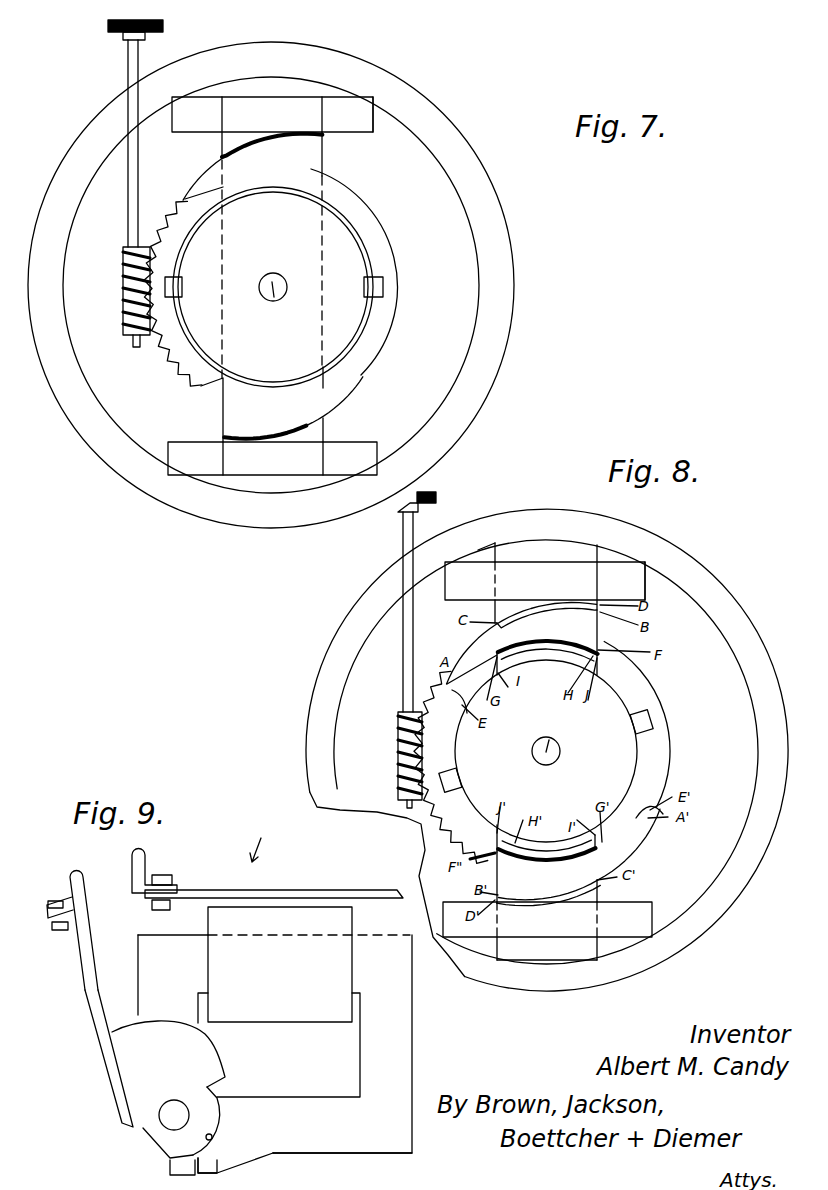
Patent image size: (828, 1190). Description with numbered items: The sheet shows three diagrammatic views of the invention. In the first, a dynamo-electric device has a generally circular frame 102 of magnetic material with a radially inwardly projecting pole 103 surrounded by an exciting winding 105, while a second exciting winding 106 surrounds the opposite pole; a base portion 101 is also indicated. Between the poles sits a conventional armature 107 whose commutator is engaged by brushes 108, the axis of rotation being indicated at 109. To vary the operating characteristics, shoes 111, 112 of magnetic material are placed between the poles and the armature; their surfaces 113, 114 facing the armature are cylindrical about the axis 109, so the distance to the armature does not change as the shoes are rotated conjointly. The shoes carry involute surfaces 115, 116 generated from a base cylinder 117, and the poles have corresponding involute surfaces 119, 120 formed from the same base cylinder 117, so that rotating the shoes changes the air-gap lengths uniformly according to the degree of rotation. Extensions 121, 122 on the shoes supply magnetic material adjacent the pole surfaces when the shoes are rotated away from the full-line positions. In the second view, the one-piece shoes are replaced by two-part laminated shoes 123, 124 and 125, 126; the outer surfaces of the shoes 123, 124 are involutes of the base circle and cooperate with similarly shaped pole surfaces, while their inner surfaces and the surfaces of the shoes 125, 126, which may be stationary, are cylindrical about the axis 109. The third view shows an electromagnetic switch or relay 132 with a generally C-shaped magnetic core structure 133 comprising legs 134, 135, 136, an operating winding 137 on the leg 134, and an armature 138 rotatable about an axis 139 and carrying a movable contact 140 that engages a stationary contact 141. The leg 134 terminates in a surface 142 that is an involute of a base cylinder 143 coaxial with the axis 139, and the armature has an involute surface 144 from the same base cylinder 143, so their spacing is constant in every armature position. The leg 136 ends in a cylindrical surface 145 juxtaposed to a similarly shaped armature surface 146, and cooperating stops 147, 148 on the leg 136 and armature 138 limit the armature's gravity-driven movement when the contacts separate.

In FIG. 7, the base 101 is at (318, 432).
In FIG. 8, the base 101 is at (560, 958).
In FIG. 7, the frame 102 is at (498, 258).
In FIG. 8, the frame 102 is at (707, 583).
In FIG. 7, the pole 103 is at (290, 107).
In FIG. 8, the pole 103 is at (575, 552).
In FIG. 7, the exciting winding 105 is at (370, 118).
In FIG. 8, the exciting winding 105 is at (628, 577).
In FIG. 7, the exciting winding 106 is at (178, 460).
In FIG. 8, the exciting winding 106 is at (648, 914).
In FIG. 7, the armature 107 is at (340, 238).
In FIG. 8, the armature 107 is at (623, 762).
In FIG. 7, the brushes 108 is at (164, 290).
In FIG. 8, the brushes 108 is at (655, 726).
In FIG. 7, the axis of rotation 109 is at (274, 297).
In FIG. 8, the axis of rotation 109 is at (534, 733).
In FIG. 7, the shoe 111 is at (325, 160).
In FIG. 7, the shoe 112 is at (230, 413).
In FIG. 7, the cylindrical surface 113 is at (280, 188).
In FIG. 7, the cylindrical surface 114 is at (272, 385).
In FIG. 7, the involute surface 115 is at (205, 172).
In FIG. 7, the involute surface 116 is at (346, 403).
In FIG. 7, the base cylinder 117 is at (268, 274).
In FIG. 8, the base cylinder 117 is at (561, 752).
In FIG. 7, the involute surface 119 is at (232, 148).
In FIG. 7, the involute surface 120 is at (294, 441).
In FIG. 7, the extension 121 is at (196, 190).
In FIG. 7, the extension 122 is at (348, 386).
In FIG. 8, the shoe part 123 is at (588, 632).
In FIG. 8, the shoe part 124 is at (496, 880).
In FIG. 8, the shoe part 125 is at (593, 662).
In FIG. 8, the shoe part 126 is at (537, 848).
In FIG. 9, the electromagnetic switch or relay 132 is at (246, 842).
In FIG. 9, the magnetic core structure 133 is at (437, 1043).
In FIG. 9, the leg 134 is at (187, 941).
In FIG. 9, the leg 135 is at (365, 1054).
In FIG. 9, the leg 136 is at (312, 1145).
In FIG. 9, the operating winding 137 is at (287, 910).
In FIG. 9, the armature 138 is at (128, 1075).
In FIG. 9, the axis 139 is at (165, 1122).
In FIG. 9, the movable contact 140 is at (77, 872).
In FIG. 9, the stationary contact 141 is at (146, 855).
In FIG. 9, the involute surface 142 is at (162, 1012).
In FIG. 9, the base cylinder 143 is at (172, 1100).
In FIG. 9, the involute surface 144 is at (204, 1046).
In FIG. 9, the cylindrical surface 145 is at (223, 1120).
In FIG. 9, the cylindrical surface 146 is at (215, 1137).
In FIG. 9, the stop 147 is at (223, 1176).
In FIG. 9, the stop 148 is at (170, 1172).